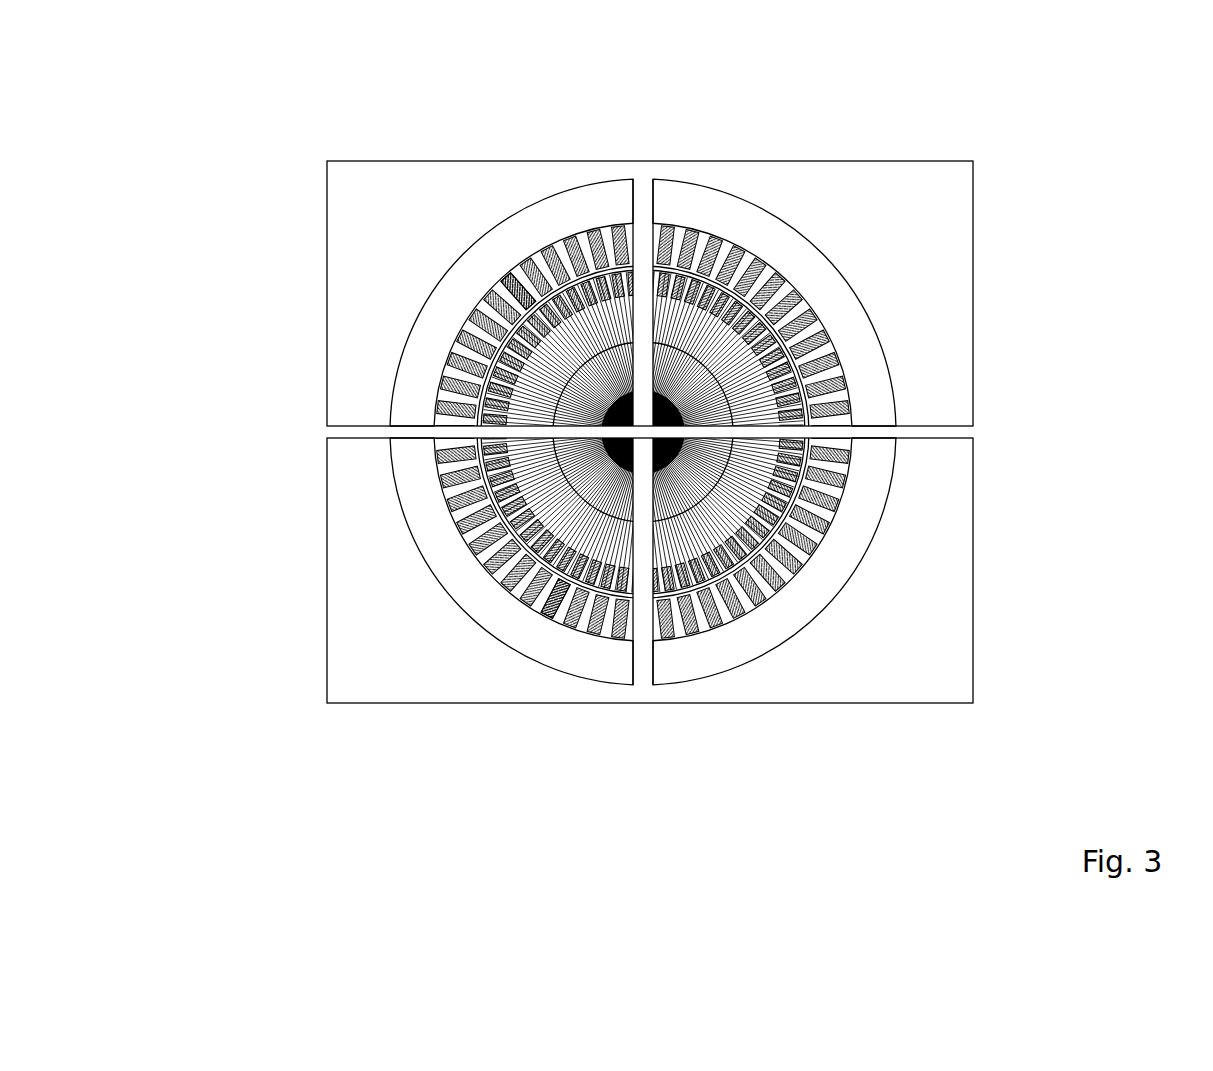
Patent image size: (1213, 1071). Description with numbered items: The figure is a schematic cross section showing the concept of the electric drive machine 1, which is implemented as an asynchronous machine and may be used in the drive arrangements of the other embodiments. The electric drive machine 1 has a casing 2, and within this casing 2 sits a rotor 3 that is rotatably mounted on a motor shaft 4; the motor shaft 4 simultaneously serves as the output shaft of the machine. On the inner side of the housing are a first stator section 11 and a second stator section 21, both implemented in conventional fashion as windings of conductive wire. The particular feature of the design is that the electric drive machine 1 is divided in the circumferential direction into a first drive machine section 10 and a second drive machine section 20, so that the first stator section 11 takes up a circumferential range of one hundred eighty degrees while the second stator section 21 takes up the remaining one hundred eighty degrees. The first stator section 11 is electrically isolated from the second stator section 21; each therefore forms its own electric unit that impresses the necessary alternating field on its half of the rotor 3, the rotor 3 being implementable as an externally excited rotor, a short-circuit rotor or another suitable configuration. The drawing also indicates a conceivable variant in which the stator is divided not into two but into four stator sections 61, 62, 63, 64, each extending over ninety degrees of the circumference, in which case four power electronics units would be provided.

The electric drive machine 1 is at (713, 445).
The casing 2 is at (755, 439).
The rotor 3 is at (783, 592).
The motor shaft 4 is at (835, 523).
The first drive machine section 10 is at (318, 293).
The second drive machine section 20 is at (318, 571).
The first stator section 11 is at (503, 287).
The second stator section 21 is at (547, 614).
The stator section 61 is at (605, 185).
The stator section 62 is at (608, 685).
The stator section 63 is at (693, 685).
The stator section 64 is at (718, 185).